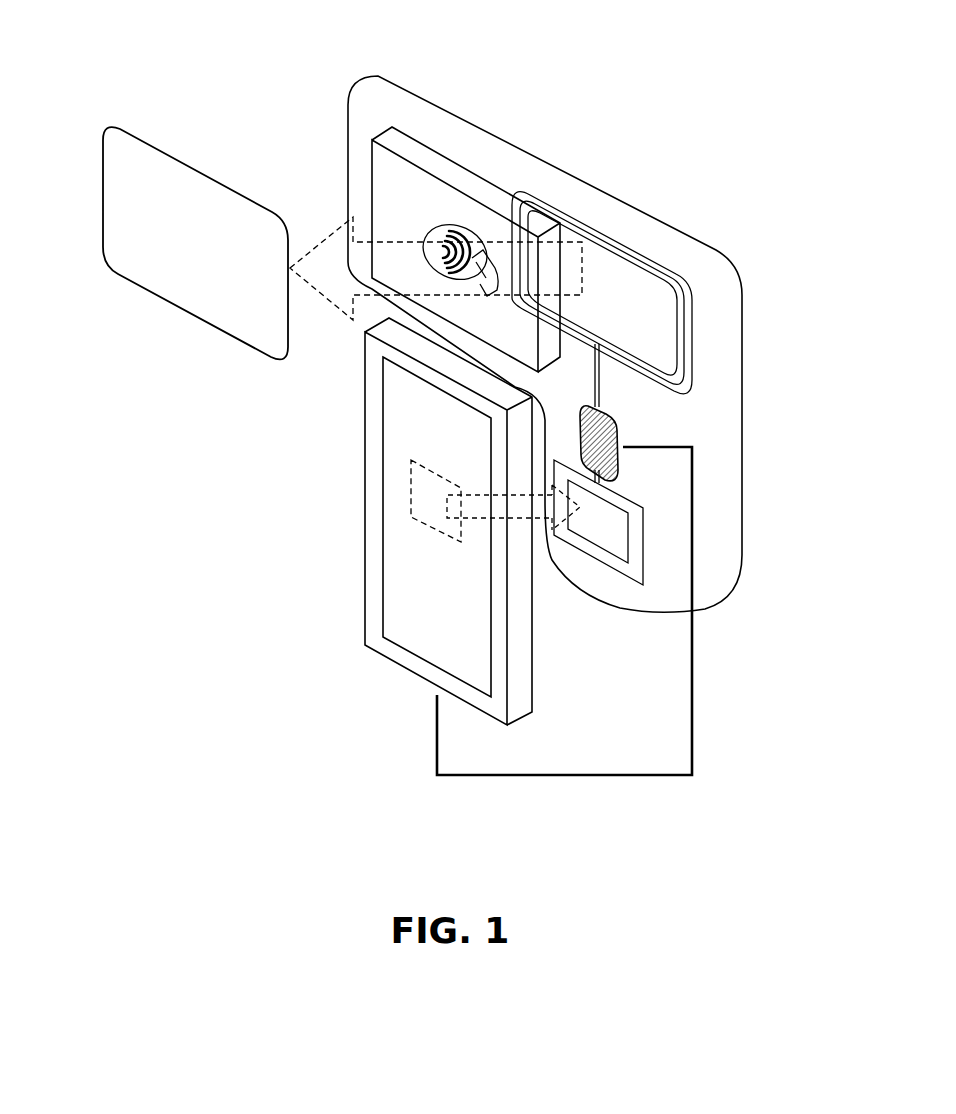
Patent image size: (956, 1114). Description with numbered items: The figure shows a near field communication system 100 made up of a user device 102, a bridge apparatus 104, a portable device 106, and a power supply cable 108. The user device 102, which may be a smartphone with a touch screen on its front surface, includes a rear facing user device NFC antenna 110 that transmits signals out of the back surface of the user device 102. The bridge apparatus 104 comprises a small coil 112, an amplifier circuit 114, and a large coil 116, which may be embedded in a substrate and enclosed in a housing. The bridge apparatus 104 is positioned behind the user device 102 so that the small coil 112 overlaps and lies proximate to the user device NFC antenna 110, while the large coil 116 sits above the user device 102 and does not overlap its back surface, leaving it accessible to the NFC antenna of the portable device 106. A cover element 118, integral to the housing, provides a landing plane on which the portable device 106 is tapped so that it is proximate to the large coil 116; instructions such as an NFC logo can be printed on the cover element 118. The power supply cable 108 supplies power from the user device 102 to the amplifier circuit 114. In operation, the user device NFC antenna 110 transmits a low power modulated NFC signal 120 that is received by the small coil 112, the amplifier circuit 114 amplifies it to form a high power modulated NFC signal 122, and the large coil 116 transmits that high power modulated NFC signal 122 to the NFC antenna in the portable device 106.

The system 100 is at (642, 76).
The user device 102 is at (365, 458).
The bridge apparatus 104 is at (742, 395).
The portable device 106 is at (103, 137).
The power supply cable 108 is at (693, 695).
The user device NFC antenna 110 is at (433, 527).
The small coil 112 is at (643, 553).
The amplifier circuit 114 is at (620, 430).
The large coil 116 is at (610, 227).
The cover element 118 is at (455, 172).
The low power modulated NFC signal 120 is at (513, 518).
The high power modulated NFC signal 122 is at (327, 232).